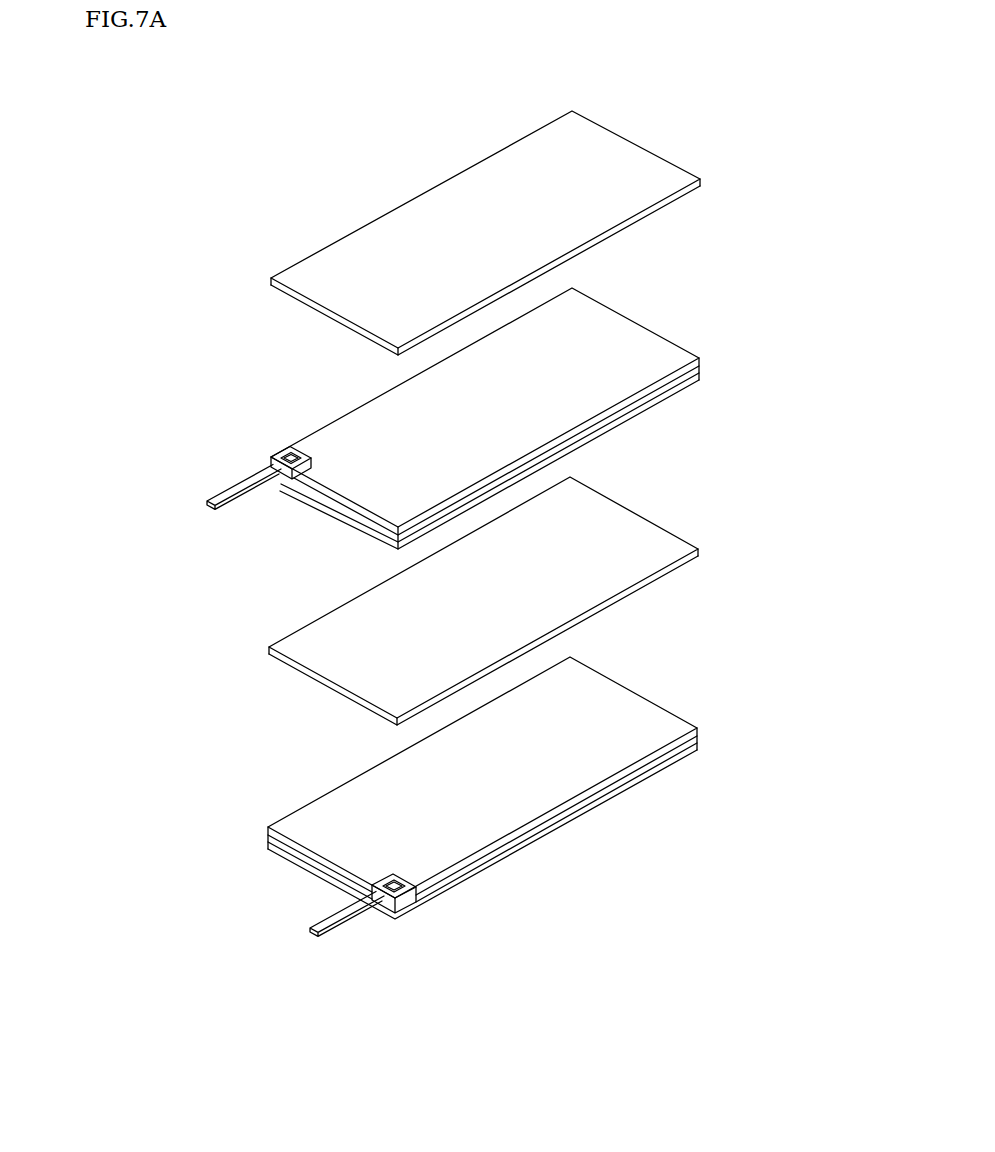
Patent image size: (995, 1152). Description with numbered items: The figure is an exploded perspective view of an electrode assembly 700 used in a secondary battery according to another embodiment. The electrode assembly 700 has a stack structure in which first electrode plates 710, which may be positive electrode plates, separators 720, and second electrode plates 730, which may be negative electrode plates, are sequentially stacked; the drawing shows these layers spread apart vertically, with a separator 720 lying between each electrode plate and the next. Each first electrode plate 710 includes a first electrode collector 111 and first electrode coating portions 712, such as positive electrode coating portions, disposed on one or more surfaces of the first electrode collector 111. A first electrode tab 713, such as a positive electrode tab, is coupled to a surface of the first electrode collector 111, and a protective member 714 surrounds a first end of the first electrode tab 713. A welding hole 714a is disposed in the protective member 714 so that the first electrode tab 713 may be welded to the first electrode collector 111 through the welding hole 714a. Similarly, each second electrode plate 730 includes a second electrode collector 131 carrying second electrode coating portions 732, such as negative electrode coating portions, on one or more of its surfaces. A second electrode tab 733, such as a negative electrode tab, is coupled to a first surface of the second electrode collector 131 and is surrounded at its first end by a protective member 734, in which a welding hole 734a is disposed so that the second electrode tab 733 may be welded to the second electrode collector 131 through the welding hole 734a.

The electrode assembly 700 is at (287, 143).
The first electrode plate 710 is at (456, 820).
The first electrode collector 111 is at (270, 837).
The first electrode coating portion 712 is at (510, 848).
The first electrode tab 713 is at (333, 921).
The protective member 714 is at (434, 919).
The welding hole 714a is at (410, 892).
The separator 720 is at (325, 295).
The second electrode plate 730 is at (447, 414).
The second electrode collector 131 is at (364, 519).
The second electrode coating portion 732 is at (650, 402).
The second electrode tab 733 is at (236, 497).
The protective member 734 is at (258, 437).
The welding hole 734a is at (286, 451).